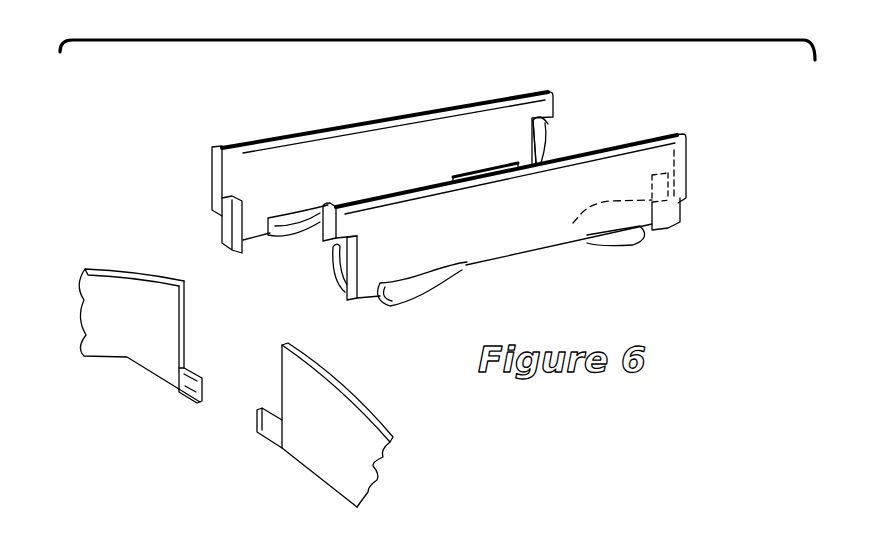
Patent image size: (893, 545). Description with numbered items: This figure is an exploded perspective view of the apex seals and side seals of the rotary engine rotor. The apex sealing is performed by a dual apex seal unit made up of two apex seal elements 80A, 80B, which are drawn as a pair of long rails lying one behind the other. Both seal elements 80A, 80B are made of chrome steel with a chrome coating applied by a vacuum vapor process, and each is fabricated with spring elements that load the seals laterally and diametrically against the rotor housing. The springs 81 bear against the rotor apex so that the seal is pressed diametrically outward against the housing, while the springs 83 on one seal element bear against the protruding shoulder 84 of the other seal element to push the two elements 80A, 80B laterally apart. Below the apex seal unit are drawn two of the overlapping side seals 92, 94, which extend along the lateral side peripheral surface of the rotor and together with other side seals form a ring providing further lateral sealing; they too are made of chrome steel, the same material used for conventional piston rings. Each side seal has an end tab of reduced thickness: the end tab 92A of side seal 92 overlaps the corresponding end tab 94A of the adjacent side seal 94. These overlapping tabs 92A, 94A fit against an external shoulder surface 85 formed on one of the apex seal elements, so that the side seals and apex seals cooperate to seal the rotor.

The apex seal element 80A is at (345, 120).
The apex seal element 80B is at (372, 180).
The springs 81 is at (470, 172).
The springs 83 is at (550, 132).
The protruding shoulder 84 is at (243, 207).
The external shoulder surface 85 is at (225, 238).
The side seal 92 is at (113, 270).
The end tab 92A is at (193, 372).
The side seal 94 is at (352, 393).
The end tab 94A is at (260, 427).